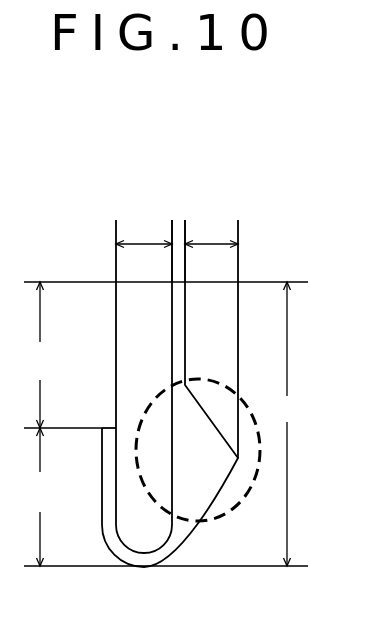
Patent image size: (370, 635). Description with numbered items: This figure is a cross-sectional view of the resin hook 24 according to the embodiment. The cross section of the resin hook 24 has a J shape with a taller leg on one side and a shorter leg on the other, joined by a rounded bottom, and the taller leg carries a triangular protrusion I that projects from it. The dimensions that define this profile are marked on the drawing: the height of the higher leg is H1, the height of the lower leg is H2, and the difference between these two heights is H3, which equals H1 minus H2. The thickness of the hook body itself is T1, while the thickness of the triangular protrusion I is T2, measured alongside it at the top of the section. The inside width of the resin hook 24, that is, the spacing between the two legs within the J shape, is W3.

The resin hook 24 is at (176, 122).
The triangular protrusion I is at (215, 382).
The inside width of the resin hook W3 is at (146, 226).
The thickness of the resin hook T1 is at (177, 223).
The thickness of the protrusion T2 is at (212, 223).
The height of the higher leg H1 is at (287, 424).
The height of the lower leg H2 is at (40, 497).
The difference between the height of the higher leg and the height of the lower leg H3 is at (40, 355).